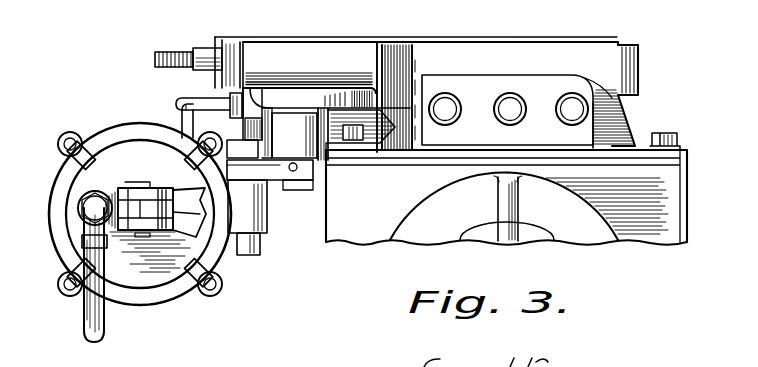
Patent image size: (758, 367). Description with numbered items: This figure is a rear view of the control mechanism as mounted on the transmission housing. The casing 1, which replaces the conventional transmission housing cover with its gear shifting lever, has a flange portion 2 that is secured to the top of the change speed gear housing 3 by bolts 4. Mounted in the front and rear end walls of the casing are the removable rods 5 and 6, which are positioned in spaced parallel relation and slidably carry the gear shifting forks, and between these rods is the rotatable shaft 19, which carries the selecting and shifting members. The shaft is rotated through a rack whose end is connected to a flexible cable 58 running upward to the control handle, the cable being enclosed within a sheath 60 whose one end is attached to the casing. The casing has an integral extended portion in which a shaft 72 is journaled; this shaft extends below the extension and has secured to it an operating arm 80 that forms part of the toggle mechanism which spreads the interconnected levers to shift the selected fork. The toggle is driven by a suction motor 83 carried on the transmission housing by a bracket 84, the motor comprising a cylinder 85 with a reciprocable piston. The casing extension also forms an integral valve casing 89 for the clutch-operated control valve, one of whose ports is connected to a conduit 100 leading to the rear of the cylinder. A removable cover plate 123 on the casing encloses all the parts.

The casing 1 is at (608, 77).
The flange portion 2 is at (676, 154).
The change speed gear housing 3 is at (672, 200).
The bolts 4 is at (346, 142).
The rod 5 is at (572, 106).
The rod 6 is at (445, 106).
The rotatable shaft 19 is at (508, 106).
The flexible cable 58 is at (157, 53).
The sheath 60 is at (191, 52).
The shaft 72 is at (296, 191).
The operating arm 80 is at (271, 182).
The suction motor 83 is at (160, 306).
The bracket 84 is at (182, 205).
The cylinder 85 is at (224, 258).
The valve casing 89 is at (265, 232).
The conduit 100 is at (92, 313).
The cover plate 123 is at (601, 36).